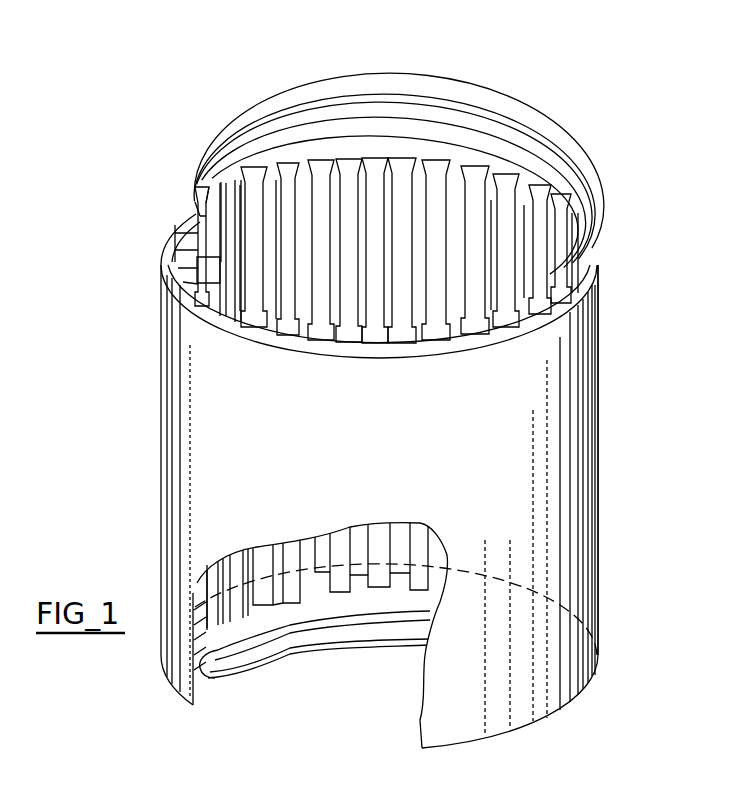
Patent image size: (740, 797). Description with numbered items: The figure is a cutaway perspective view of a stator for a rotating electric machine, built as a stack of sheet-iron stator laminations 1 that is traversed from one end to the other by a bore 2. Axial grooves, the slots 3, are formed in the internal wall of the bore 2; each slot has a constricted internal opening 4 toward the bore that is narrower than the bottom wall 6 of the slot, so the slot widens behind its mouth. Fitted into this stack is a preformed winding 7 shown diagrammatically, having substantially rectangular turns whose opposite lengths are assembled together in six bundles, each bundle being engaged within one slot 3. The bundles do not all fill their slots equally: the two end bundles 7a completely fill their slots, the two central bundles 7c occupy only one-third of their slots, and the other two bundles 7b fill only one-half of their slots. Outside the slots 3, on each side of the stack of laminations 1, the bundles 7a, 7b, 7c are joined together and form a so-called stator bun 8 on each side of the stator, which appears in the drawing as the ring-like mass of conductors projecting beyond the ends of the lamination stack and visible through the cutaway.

The stack of stator laminations 1 is at (582, 463).
The bore 2 is at (490, 219).
The slot 3 is at (548, 248).
The constricted internal opening 4 is at (549, 188).
The bottom wall 6 is at (513, 178).
The preformed winding 7 is at (334, 63).
The end bundles 7a is at (224, 242).
The bundles 7b is at (240, 241).
The central bundles 7c is at (287, 278).
The stator bun 8 is at (430, 90).